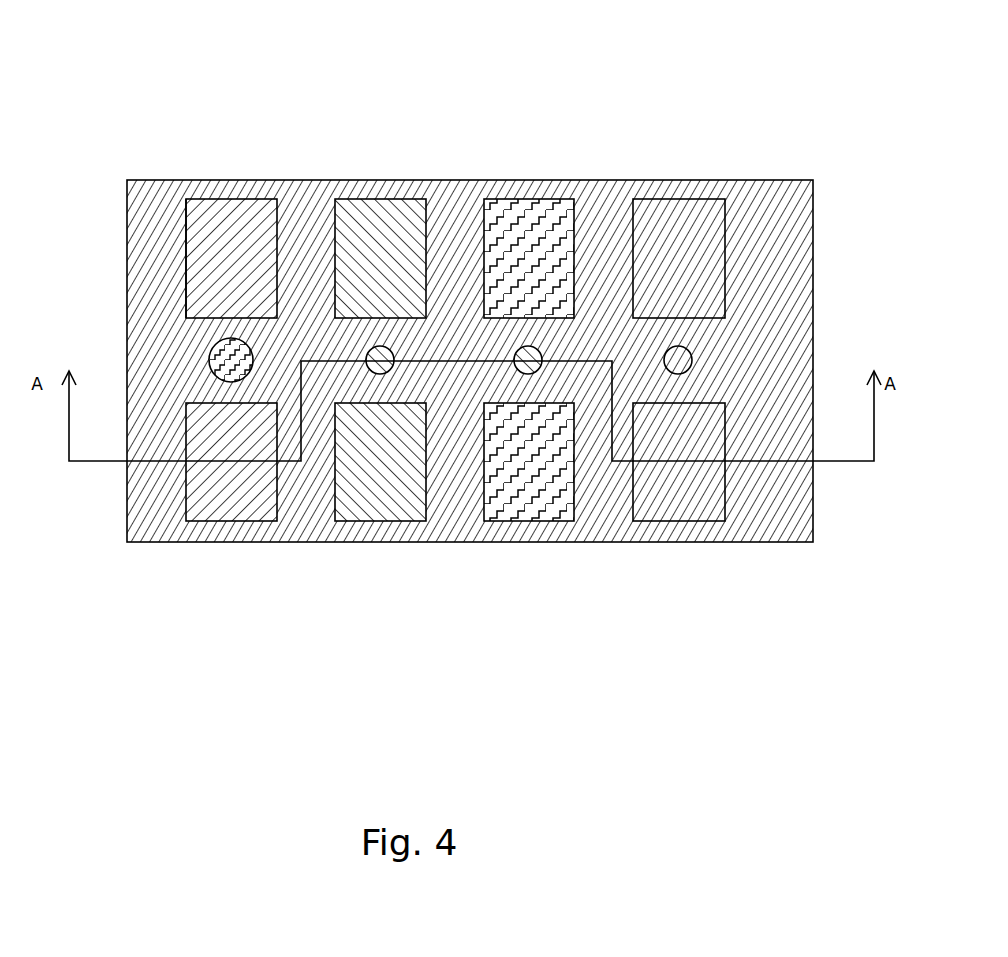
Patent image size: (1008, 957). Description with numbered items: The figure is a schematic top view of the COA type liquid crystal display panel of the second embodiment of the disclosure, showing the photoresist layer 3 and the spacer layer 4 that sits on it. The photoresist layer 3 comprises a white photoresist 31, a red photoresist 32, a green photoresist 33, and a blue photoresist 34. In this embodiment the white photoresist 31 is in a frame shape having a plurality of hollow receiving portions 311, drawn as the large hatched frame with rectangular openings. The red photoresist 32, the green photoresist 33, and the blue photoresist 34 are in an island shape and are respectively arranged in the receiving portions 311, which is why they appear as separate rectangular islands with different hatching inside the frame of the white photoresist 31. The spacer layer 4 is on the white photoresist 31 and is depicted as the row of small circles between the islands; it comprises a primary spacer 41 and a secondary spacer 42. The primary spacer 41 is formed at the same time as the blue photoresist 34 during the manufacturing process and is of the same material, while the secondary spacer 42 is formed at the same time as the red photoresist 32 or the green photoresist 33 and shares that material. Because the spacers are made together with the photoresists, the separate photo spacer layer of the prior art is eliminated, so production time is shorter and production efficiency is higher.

The photoresist layer 3 is at (376, 271).
The white photoresist 31 is at (665, 245).
The receiving portion 311 is at (186, 260).
The red photoresist 32 is at (233, 248).
The green photoresist 33 is at (371, 250).
The blue photoresist 34 is at (528, 248).
The spacer layer 4 is at (450, 499).
The primary spacer 41 is at (230, 382).
The secondary spacer 42 is at (380, 374).